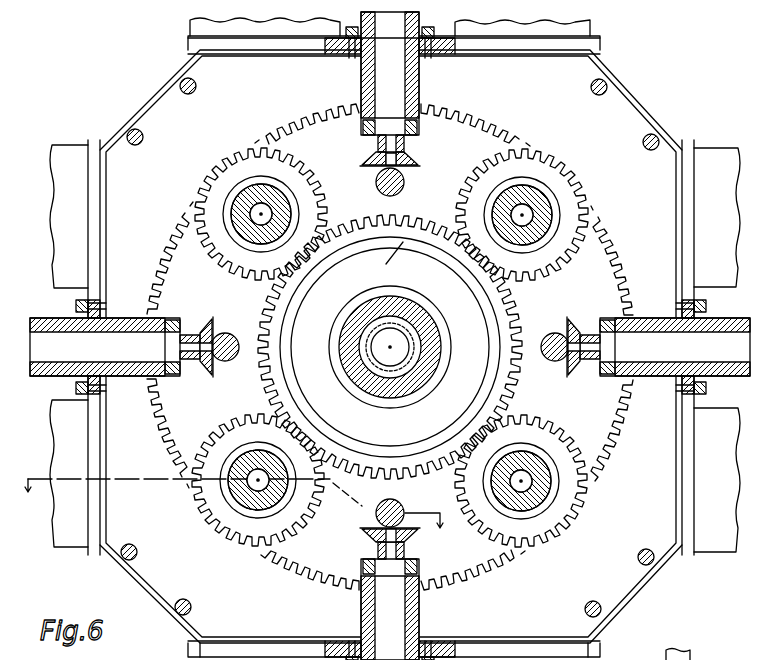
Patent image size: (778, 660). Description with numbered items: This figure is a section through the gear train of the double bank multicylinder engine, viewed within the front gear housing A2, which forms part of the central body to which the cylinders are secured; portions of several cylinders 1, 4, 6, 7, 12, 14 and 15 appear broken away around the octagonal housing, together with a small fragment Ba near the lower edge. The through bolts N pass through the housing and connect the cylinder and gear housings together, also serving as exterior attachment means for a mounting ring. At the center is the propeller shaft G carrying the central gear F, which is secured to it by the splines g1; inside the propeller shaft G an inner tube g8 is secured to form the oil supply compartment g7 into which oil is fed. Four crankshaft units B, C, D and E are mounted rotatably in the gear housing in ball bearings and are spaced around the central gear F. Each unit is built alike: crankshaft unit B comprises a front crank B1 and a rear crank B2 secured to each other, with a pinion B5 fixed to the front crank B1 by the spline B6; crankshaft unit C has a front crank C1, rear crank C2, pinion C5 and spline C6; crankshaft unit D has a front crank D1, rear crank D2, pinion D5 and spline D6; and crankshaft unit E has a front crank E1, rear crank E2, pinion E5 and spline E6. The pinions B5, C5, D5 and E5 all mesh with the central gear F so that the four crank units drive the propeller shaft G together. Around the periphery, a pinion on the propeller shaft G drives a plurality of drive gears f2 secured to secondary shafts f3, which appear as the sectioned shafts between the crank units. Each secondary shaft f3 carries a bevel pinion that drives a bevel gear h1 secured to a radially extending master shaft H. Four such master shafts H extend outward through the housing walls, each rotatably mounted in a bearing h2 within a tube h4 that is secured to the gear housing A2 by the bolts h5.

The cylinder 1 is at (580, 29).
The cylinder 4 is at (205, 25).
The cylinder 6 is at (62, 163).
The cylinder 7 is at (72, 525).
The cylinder 12 is at (602, 659).
The cylinder 14 is at (719, 532).
The cylinder 15 is at (722, 160).
The bracket Ba is at (706, 651).
The front gear housing A2 is at (654, 590).
The through bolts N is at (182, 100).
The master shaft H is at (392, 330).
The bevel gear h1 is at (415, 152).
The bearing h2 is at (365, 128).
The tube h4 is at (367, 61).
The bolts h5 is at (352, 28).
The central gear F is at (389, 349).
The drive gears f2 is at (444, 145).
The secondary shafts f3 is at (378, 181).
The propeller shaft G is at (390, 347).
The splines g1 is at (342, 345).
The oil supply compartment g7 is at (383, 317).
The inner tube g8 is at (395, 326).
The crankshaft unit E is at (233, 192).
The front crank E1 is at (270, 190).
The rear crank E2 is at (255, 192).
The pinion E5 is at (230, 180).
The spline E6 is at (238, 197).
The crankshaft unit D is at (541, 195).
The front crank D1 is at (521, 190).
The rear crank D2 is at (529, 187).
The pinion D5 is at (549, 177).
The spline D6 is at (544, 195).
The crankshaft unit B is at (237, 499).
The front crank B1 is at (240, 458).
The rear crank B2 is at (233, 468).
The pinion B5 is at (238, 499).
The spline B6 is at (237, 503).
The crankshaft unit C is at (540, 481).
The front crank C1 is at (549, 457).
The rear crank C2 is at (556, 463).
The pinion C5 is at (571, 490).
The spline C6 is at (544, 503).